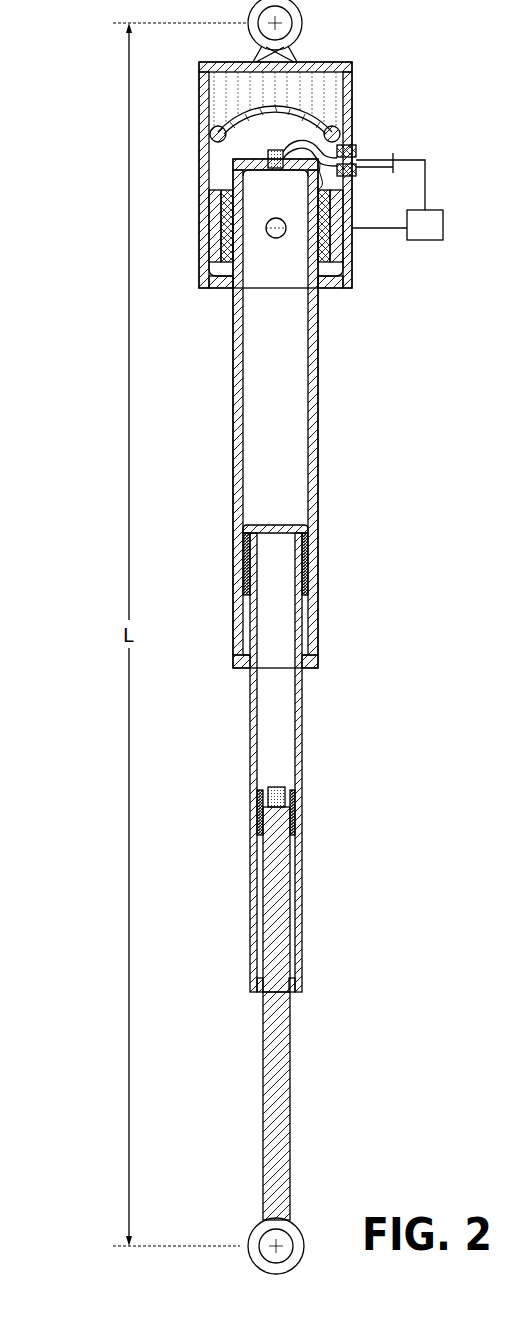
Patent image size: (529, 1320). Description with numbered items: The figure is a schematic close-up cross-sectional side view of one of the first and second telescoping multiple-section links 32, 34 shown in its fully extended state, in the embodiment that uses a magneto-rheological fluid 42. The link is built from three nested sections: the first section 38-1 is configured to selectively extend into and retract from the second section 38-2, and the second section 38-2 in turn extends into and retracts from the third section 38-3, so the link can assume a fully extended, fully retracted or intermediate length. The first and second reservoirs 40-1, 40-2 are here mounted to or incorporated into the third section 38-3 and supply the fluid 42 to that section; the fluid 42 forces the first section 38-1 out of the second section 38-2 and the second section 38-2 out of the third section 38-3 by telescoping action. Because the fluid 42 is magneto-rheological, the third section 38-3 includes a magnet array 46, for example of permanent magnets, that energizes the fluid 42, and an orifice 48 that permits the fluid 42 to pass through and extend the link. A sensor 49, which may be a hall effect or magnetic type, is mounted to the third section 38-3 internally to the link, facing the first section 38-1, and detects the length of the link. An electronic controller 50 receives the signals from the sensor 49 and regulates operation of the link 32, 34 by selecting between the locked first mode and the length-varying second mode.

The first telescoping multiple-section link 32 is at (257, 637).
The second telescoping multiple-section link 34 is at (257, 637).
The first section 38-1 is at (288, 1120).
The second section 38-2 is at (302, 910).
The third section 38-3 is at (313, 612).
The first reservoir 40-1 is at (342, 175).
The second reservoir 40-2 is at (333, 97).
The fluid 42 is at (306, 135).
The magnet array 46 is at (337, 248).
The orifice 48 is at (276, 238).
The sensor 49 is at (264, 152).
The electronic controller 50 is at (425, 225).